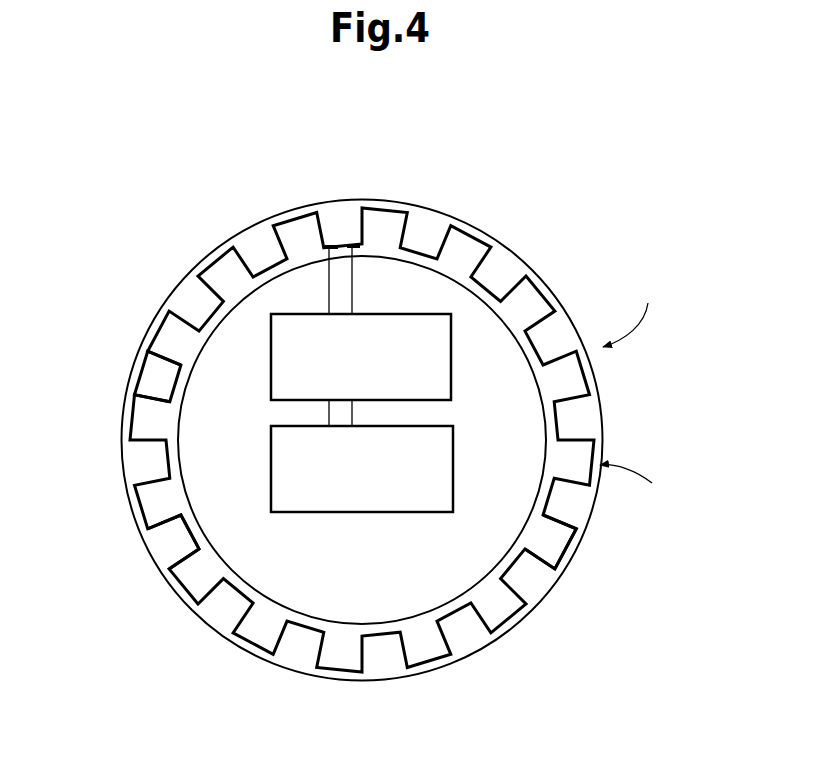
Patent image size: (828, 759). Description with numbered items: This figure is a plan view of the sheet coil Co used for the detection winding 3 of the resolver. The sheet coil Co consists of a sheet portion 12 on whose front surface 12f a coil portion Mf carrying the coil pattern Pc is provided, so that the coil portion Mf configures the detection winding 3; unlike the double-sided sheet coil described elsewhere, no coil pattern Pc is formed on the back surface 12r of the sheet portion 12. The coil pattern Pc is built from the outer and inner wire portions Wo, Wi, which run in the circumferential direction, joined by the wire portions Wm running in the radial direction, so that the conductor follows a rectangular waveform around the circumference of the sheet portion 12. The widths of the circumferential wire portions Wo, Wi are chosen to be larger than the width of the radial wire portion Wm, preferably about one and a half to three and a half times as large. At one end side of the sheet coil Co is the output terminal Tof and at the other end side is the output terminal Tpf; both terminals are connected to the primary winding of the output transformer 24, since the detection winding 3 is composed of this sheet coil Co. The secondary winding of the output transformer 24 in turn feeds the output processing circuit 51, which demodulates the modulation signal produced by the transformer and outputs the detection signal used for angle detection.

The detection winding 3 is at (547, 288).
The sheet portion 12 is at (603, 422).
The surface (one side) of the sheet portion 12f is at (150, 376).
The back surface (the other side) of the sheet portion 12r is at (167, 547).
The output transformer 24 is at (453, 373).
The output processing circuit 51 is at (372, 513).
The output terminal on the other end side Tpf is at (328, 243).
The output terminal on the one end side Tof is at (352, 243).
The coil pattern Pc is at (473, 225).
The sheet coil Co is at (635, 314).
The coil portion Mf is at (648, 487).
The circumferential wire portion (inner) Wi is at (512, 557).
The circumferential wire portion (outer) Wo is at (577, 553).
The radial wire portion Wm is at (540, 562).